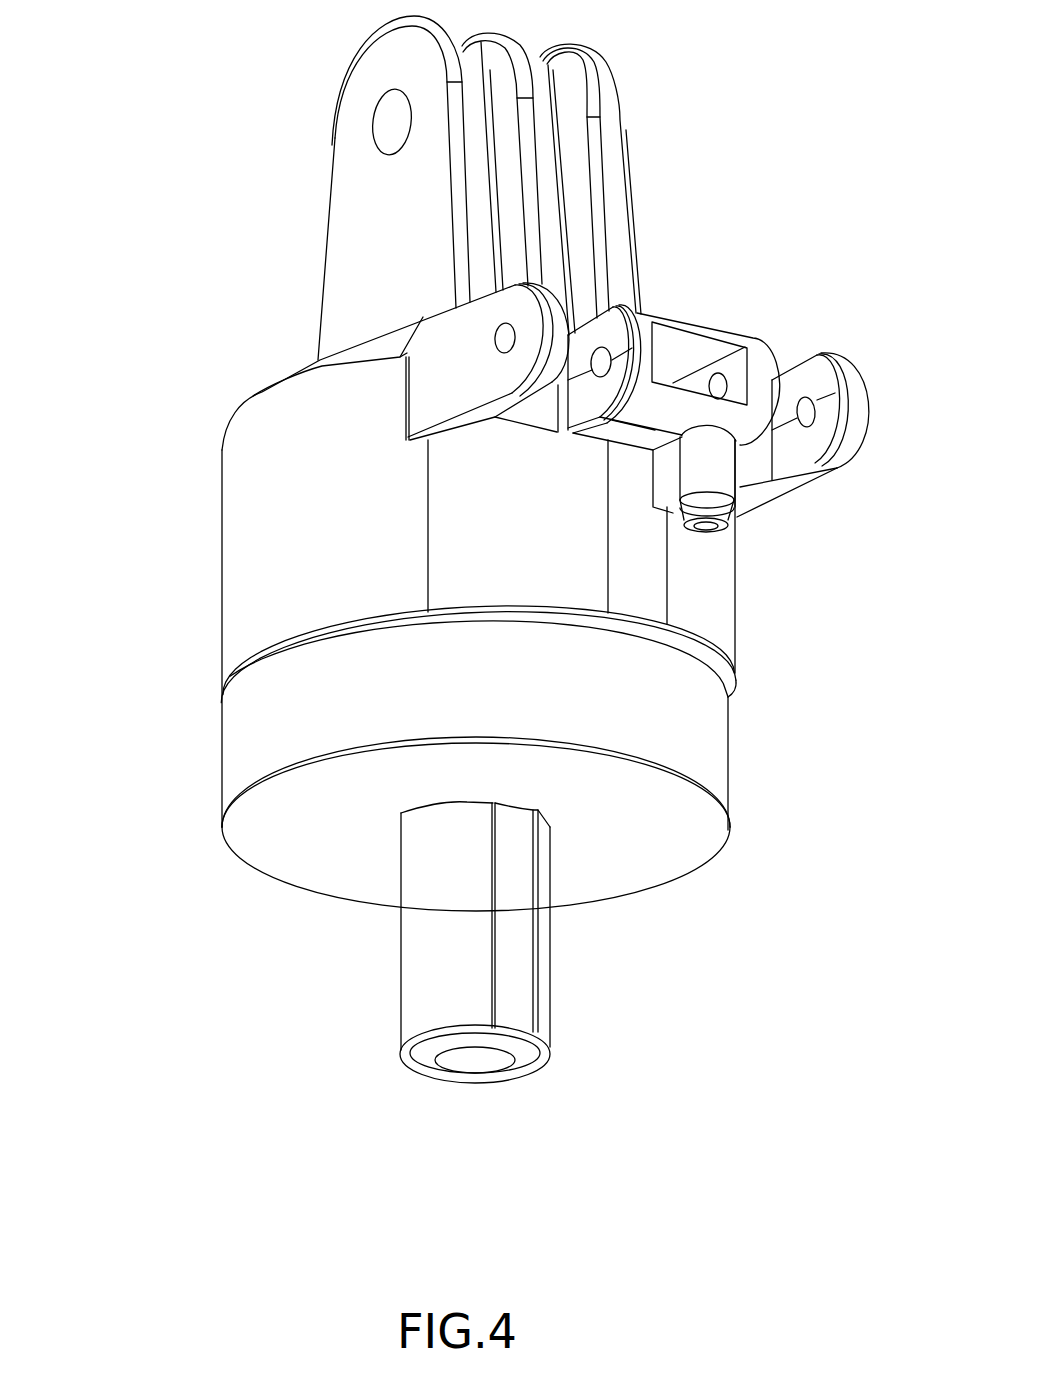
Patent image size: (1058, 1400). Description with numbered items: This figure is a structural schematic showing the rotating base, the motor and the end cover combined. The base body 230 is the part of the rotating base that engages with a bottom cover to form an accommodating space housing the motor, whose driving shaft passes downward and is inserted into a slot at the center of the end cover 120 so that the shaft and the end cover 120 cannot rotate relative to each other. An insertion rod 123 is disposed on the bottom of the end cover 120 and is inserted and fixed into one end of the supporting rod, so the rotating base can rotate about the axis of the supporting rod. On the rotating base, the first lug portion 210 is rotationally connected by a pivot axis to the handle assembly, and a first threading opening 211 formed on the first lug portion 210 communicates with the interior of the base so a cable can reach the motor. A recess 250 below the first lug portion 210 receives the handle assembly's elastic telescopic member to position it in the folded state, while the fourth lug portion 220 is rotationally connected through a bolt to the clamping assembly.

The end cover 120 is at (693, 740).
The insertion rod 123 is at (420, 965).
The first lug portion 210 is at (810, 395).
The first threading opening 211 is at (683, 352).
The fourth lug portion 220 is at (400, 120).
The base body 230 is at (252, 543).
The recess 250 is at (703, 533).